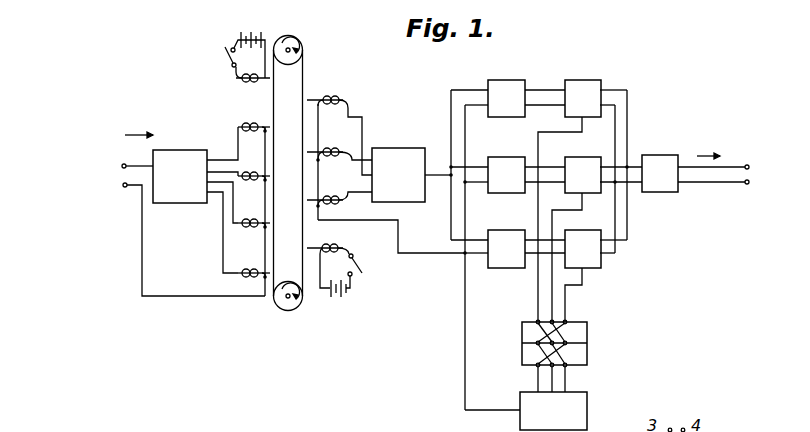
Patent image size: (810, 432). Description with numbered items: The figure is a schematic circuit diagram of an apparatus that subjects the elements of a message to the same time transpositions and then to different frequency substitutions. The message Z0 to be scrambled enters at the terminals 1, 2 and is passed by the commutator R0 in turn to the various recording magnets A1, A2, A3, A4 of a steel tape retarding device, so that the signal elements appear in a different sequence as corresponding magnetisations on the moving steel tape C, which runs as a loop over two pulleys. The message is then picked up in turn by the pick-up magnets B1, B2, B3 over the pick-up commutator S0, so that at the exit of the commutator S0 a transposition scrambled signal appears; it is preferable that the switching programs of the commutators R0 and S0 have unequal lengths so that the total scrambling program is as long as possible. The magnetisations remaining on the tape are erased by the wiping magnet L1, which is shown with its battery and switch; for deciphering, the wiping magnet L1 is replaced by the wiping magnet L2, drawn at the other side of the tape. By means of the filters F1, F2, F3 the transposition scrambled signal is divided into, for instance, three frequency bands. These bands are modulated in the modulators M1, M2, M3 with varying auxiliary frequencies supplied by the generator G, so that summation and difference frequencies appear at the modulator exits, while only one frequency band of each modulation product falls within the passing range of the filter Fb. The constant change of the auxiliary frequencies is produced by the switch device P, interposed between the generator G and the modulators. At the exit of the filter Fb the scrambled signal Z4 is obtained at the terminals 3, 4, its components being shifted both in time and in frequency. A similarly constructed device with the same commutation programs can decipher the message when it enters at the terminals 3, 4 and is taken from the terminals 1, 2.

The terminal 1 is at (131, 165).
The terminal 2 is at (187, 239).
The message Z0 is at (139, 127).
The commutator R0 is at (180, 176).
The recording magnet A1 is at (248, 123).
The recording magnet A2 is at (247, 172).
The recording magnet A3 is at (247, 219).
The recording magnet A4 is at (247, 269).
The wiping magnet L2 is at (238, 83).
The steel tape C is at (304, 63).
The pick-up magnet B1 is at (334, 197).
The pick-up magnet B2 is at (333, 148).
The pick-up magnet B3 is at (340, 97).
The pick-up commutator S0 is at (398, 175).
The wiping magnet L1 is at (355, 236).
The filter F1 is at (506, 98).
The filter F2 is at (506, 175).
The filter F3 is at (506, 249).
The modulator M1 is at (583, 98).
The modulator M2 is at (583, 175).
The modulator M3 is at (583, 249).
The filter Fb is at (660, 173).
The scrambled signal Z4 is at (708, 148).
The terminal 3 is at (715, 157).
The terminal 4 is at (713, 190).
The switch device P is at (589, 350).
The generator G is at (553, 411).